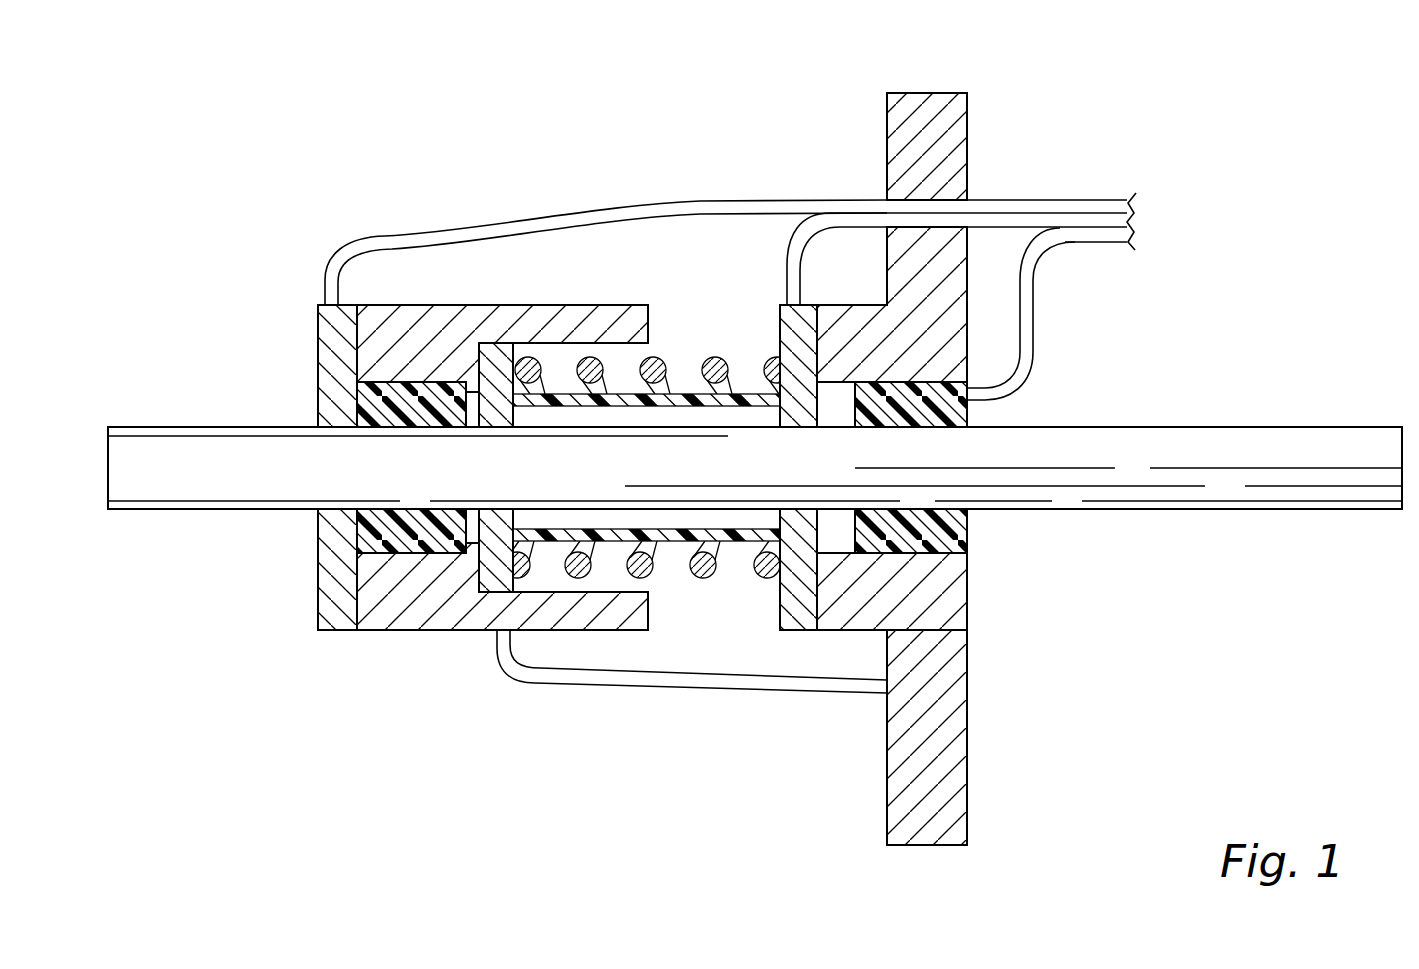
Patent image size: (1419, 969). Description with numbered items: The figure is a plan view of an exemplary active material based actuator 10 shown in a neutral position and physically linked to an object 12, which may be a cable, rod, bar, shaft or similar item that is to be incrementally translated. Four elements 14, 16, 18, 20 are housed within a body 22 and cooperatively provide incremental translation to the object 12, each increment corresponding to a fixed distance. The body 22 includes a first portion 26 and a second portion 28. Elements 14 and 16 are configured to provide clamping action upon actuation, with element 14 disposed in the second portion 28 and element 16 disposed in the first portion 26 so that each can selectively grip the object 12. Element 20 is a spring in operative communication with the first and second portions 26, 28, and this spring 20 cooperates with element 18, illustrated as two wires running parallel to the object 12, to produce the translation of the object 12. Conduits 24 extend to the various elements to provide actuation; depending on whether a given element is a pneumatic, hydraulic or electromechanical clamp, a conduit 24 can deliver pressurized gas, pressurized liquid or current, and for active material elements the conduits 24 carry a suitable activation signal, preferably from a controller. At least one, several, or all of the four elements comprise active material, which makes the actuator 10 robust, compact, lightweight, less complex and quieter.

The active material based actuator 10 is at (755, 444).
The object 12 is at (1268, 442).
The element 14 is at (967, 537).
The element 16 is at (385, 530).
The element 18 is at (690, 565).
The spring 20 is at (700, 350).
The body 22 is at (991, 444).
The conduits 24 is at (520, 225).
The first portion 26 is at (445, 630).
The second portion 28 is at (967, 768).